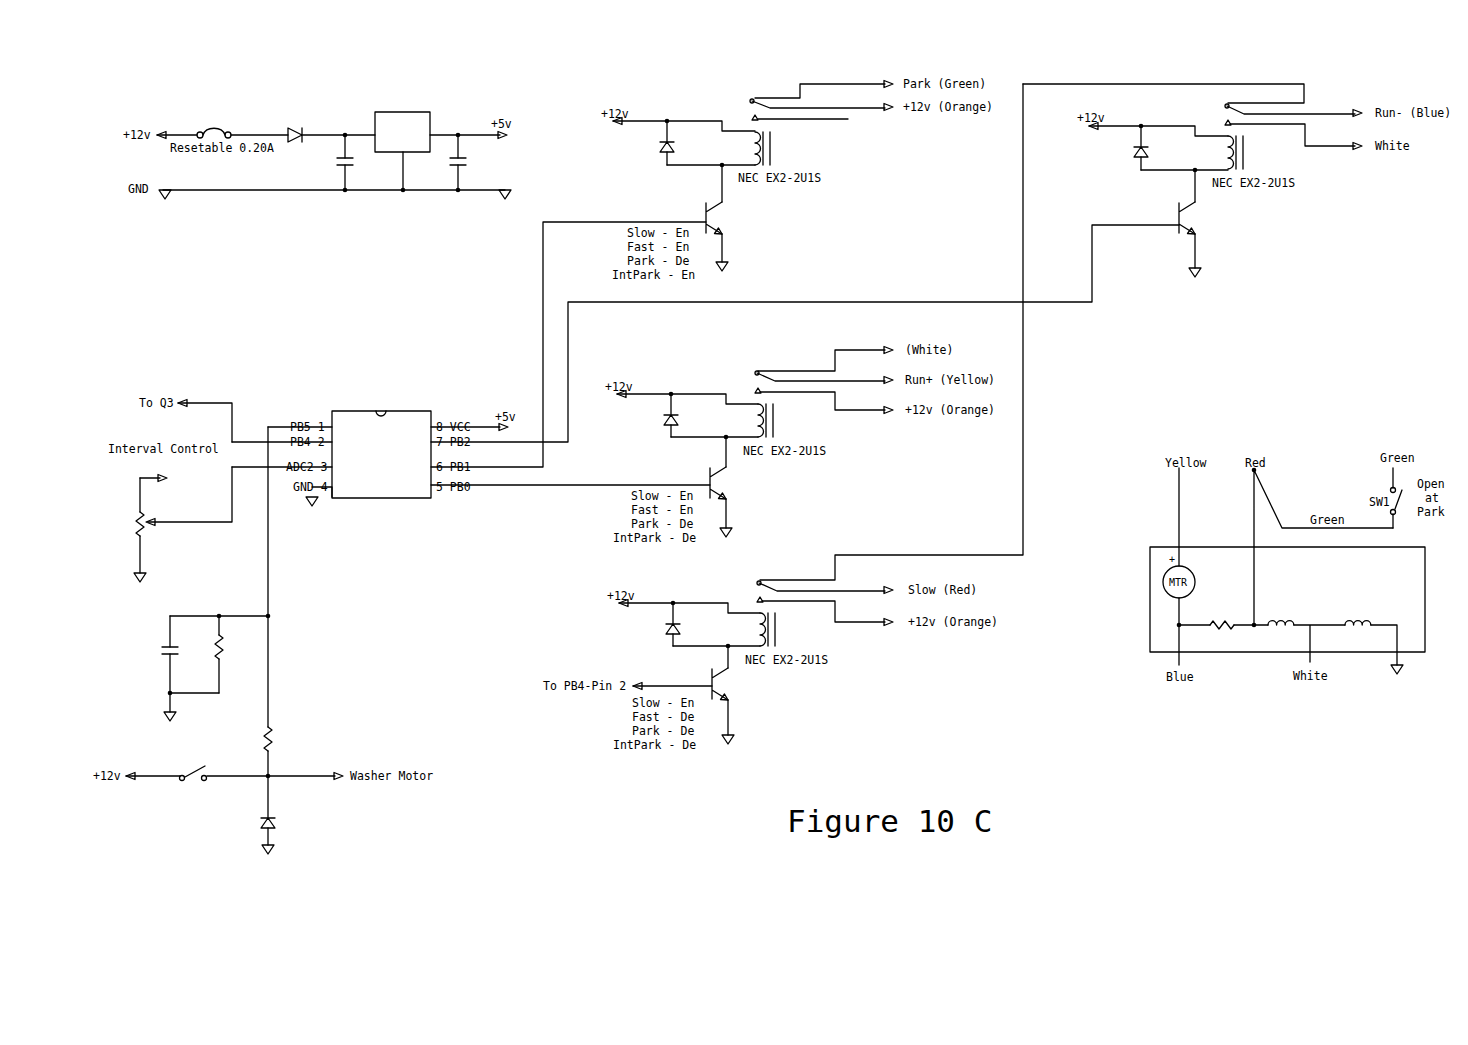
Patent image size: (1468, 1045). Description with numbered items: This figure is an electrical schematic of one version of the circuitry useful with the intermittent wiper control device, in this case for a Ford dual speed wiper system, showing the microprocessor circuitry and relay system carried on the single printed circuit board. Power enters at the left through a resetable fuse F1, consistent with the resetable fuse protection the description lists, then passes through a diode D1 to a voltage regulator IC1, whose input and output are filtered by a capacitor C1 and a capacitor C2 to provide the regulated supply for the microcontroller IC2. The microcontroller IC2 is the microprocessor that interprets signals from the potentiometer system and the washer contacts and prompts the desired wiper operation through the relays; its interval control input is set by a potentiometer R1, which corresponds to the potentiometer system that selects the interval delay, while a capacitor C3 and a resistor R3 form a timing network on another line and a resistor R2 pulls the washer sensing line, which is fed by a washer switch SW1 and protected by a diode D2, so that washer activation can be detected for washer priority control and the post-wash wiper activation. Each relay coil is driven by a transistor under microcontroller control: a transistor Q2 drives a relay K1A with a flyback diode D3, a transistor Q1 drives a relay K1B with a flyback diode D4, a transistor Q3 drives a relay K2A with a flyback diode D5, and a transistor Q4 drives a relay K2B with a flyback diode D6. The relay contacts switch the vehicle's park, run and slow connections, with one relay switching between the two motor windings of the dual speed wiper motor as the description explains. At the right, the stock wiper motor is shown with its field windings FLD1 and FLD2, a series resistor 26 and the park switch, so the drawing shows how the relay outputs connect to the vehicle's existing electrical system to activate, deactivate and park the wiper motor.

The motor series resistor 26 is at (1223, 635).
The resettable fuse 0.20A F1 is at (214, 126).
The diode D1 is at (295, 144).
The capacitor .33 uF C1 is at (364, 162).
The voltage regulator IC1 is at (403, 131).
The capacitor .1uF C2 is at (470, 162).
The Atmel ATtiny15L microcontroller IC2 is at (381, 446).
The 5K interval control potentiometer R1 is at (148, 526).
The capacitor .1uF C3 is at (181, 668).
The resistor 5k R3 is at (228, 654).
The resistor 10K R2 is at (281, 738).
The washer switch SW1 is at (194, 785).
The diode D2 is at (282, 834).
The flyback diode D3 is at (678, 143).
The relay K1A is at (821, 123).
The transistor 2N7052 Q2 is at (737, 218).
The flyback diode D4 is at (682, 415).
The relay K1B is at (824, 392).
The transistor 2N7052 Q1 is at (741, 487).
The flyback diode D5 is at (684, 624).
The relay K2A is at (890, 365).
The transistor 2N7052 Q3 is at (743, 695).
The flyback diode D6 is at (1152, 148).
The relay K2B is at (1192, 126).
The transistor 2N7052 Q4 is at (1210, 223).
The motor field winding 1 FLD1 is at (1359, 613).
The motor field winding 2 FLD2 is at (1283, 613).